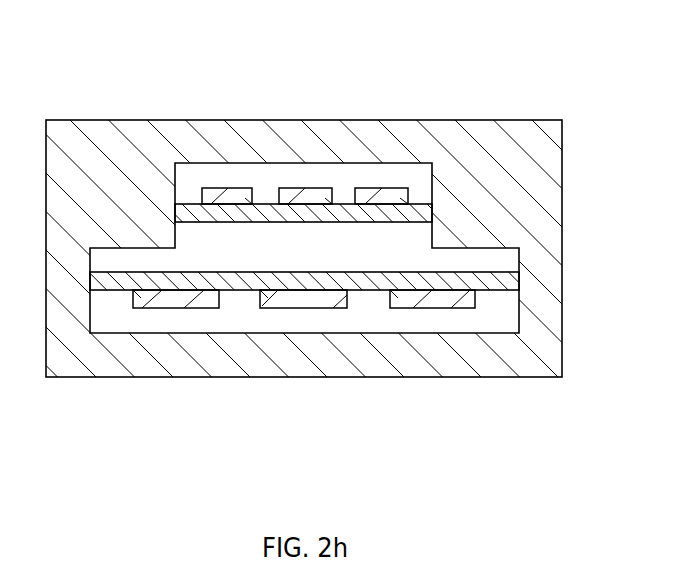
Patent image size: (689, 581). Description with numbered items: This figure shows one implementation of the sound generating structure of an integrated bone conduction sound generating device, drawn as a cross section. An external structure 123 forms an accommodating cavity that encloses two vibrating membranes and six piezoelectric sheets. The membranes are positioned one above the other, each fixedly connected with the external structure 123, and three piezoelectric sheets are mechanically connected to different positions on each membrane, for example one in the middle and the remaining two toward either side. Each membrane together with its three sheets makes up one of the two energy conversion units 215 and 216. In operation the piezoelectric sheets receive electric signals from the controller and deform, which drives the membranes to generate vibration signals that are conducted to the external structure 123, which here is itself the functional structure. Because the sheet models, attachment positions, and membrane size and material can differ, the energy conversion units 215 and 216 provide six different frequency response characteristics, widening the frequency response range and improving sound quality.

The external structure 123 is at (85, 172).
The energy conversion unit 215 is at (356, 104).
The energy conversion unit 216 is at (340, 394).